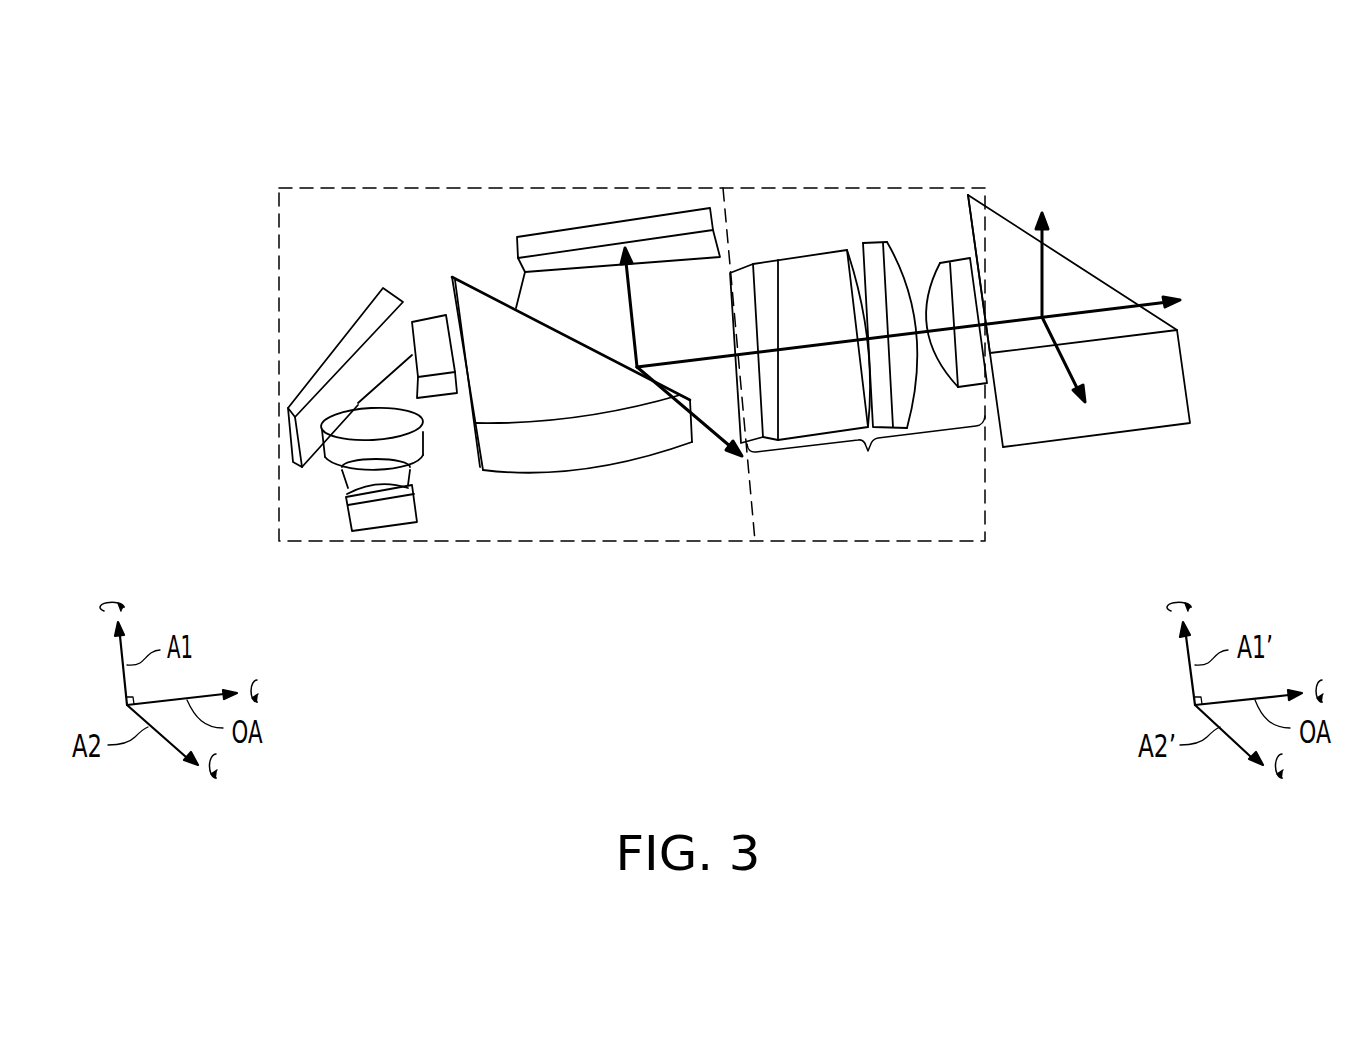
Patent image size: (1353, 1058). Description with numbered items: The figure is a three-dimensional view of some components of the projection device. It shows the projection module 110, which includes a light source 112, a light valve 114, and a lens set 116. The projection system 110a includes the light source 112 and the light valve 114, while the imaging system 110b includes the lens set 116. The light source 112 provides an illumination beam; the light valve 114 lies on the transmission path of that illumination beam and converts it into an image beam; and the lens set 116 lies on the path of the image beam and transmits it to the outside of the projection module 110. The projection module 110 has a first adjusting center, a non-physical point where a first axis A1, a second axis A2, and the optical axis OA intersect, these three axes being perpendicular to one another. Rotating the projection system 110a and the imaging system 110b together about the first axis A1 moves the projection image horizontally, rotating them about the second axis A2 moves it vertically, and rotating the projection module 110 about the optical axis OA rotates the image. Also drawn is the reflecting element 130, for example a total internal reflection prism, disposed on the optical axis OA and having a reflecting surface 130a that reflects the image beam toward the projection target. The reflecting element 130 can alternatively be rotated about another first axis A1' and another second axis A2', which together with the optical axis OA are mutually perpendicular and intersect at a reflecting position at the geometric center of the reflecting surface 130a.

The projection module 110 is at (515, 578).
The projection system 110a is at (278, 305).
The imaging system 110b is at (987, 483).
The light source 112 is at (342, 458).
The light valve 114 is at (570, 238).
The lens set 116 is at (868, 455).
The reflecting element 130 is at (1167, 383).
The reflecting surface 130a is at (1083, 268).
The optical axis OA is at (1132, 300).
The first axis A1 is at (655, 225).
The second axis A2 is at (689, 488).
The first axis A1' is at (1028, 201).
The second axis A2' is at (1085, 458).